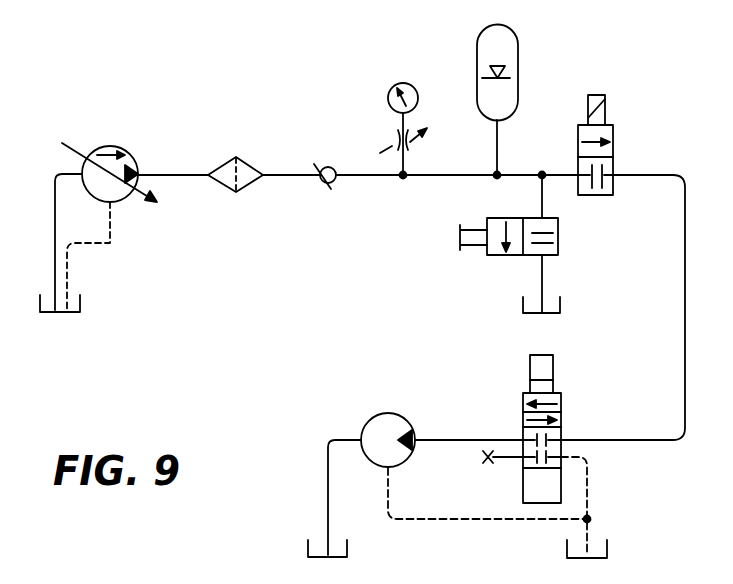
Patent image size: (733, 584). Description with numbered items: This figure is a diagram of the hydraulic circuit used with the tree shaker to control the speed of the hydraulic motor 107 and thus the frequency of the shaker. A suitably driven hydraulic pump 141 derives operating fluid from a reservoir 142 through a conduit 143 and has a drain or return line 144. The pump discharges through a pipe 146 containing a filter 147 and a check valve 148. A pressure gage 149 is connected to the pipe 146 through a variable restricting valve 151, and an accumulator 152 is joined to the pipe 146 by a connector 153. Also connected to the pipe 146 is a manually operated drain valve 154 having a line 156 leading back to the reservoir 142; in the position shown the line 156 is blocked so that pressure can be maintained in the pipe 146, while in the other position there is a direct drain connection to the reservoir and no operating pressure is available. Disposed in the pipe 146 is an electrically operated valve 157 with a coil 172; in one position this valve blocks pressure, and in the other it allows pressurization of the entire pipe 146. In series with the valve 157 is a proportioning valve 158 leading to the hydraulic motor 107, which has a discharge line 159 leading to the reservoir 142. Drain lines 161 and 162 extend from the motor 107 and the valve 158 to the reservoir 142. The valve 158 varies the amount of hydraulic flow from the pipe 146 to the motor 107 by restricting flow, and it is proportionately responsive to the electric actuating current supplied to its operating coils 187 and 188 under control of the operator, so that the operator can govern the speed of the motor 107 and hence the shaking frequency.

The hydraulic motor 107 is at (412, 397).
The hydraulic pump 141 is at (140, 137).
The reservoir 142 is at (80, 300).
The conduit 143 is at (55, 240).
The drain or return line 144 is at (109, 236).
The pipe 146 is at (196, 174).
The filter 147 is at (252, 160).
The check valve 148 is at (320, 183).
The pressure gage 149 is at (410, 86).
The variable restricting valve 151 is at (394, 140).
The accumulator 152 is at (518, 47).
The connector 153 is at (498, 147).
The manually operated drain valve 154 is at (560, 236).
The line 156 is at (540, 272).
The electrically operated valve 157 is at (613, 140).
The proportioning valve 158 is at (562, 426).
The discharge line 159 is at (330, 445).
The drain line 161 is at (450, 503).
The drain line 162 is at (590, 496).
The coil 172 is at (606, 101).
The operating coil 187 is at (554, 364).
The operating coil 188 is at (554, 384).